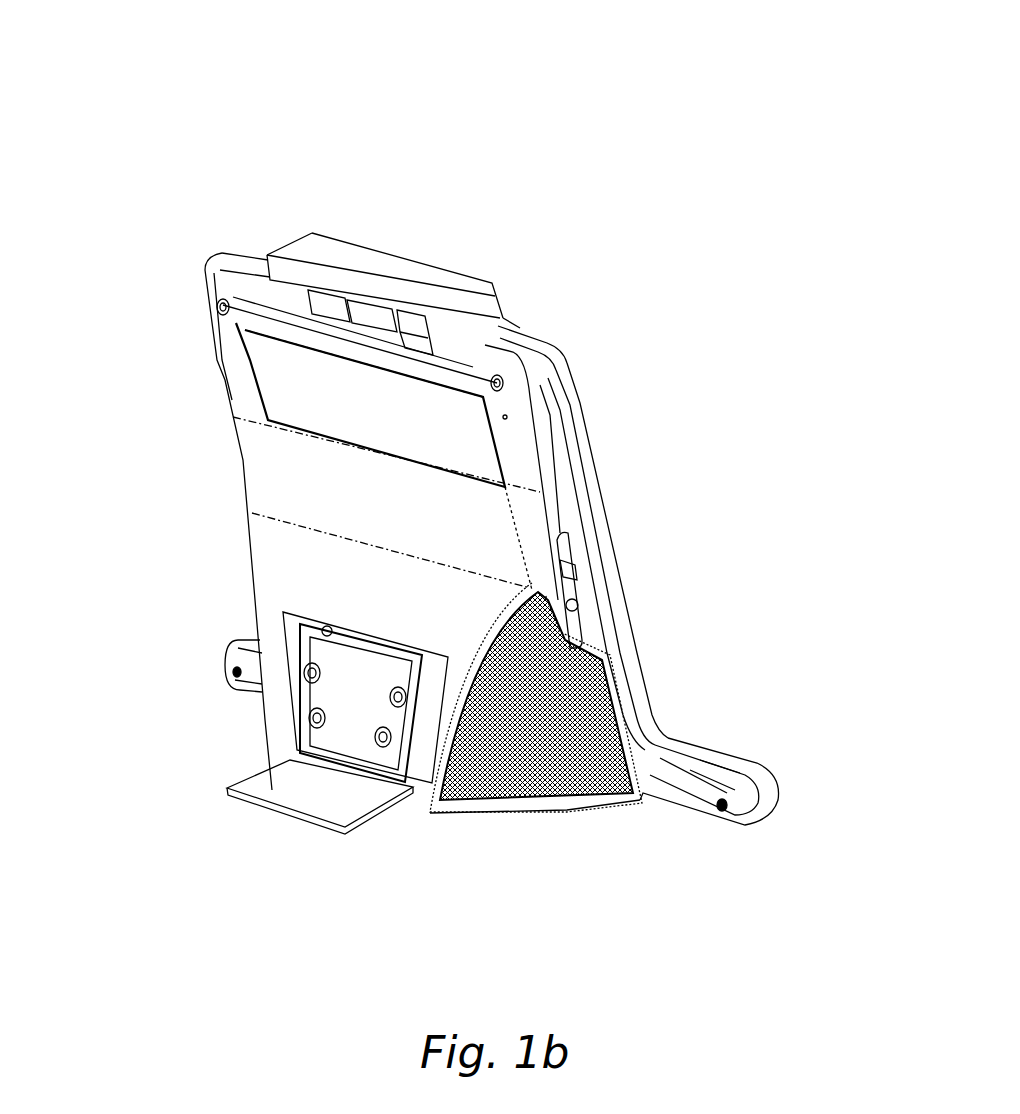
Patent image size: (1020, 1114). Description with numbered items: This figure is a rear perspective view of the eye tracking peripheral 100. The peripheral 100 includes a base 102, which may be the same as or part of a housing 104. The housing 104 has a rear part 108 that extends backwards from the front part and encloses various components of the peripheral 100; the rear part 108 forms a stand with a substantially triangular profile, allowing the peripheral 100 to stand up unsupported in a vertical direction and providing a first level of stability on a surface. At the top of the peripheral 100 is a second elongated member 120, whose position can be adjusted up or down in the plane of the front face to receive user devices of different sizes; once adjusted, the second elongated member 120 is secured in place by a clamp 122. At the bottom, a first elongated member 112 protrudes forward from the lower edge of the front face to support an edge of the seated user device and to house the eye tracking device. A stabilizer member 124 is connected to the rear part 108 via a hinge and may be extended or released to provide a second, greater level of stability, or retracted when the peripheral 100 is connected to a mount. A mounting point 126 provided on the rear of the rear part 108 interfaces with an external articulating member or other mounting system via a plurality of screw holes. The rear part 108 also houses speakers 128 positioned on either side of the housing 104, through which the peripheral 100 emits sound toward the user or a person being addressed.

The eye tracking peripheral 100 is at (578, 58).
The base 102 is at (213, 529).
The housing 104 is at (602, 505).
The rear part 108 is at (350, 525).
The first elongated member 112 is at (761, 763).
The second elongated member 120 is at (318, 257).
The clamp 122 is at (421, 328).
The stabilizer member 124 is at (293, 790).
The mounting point 126 is at (345, 695).
The speakers 128 is at (592, 680).